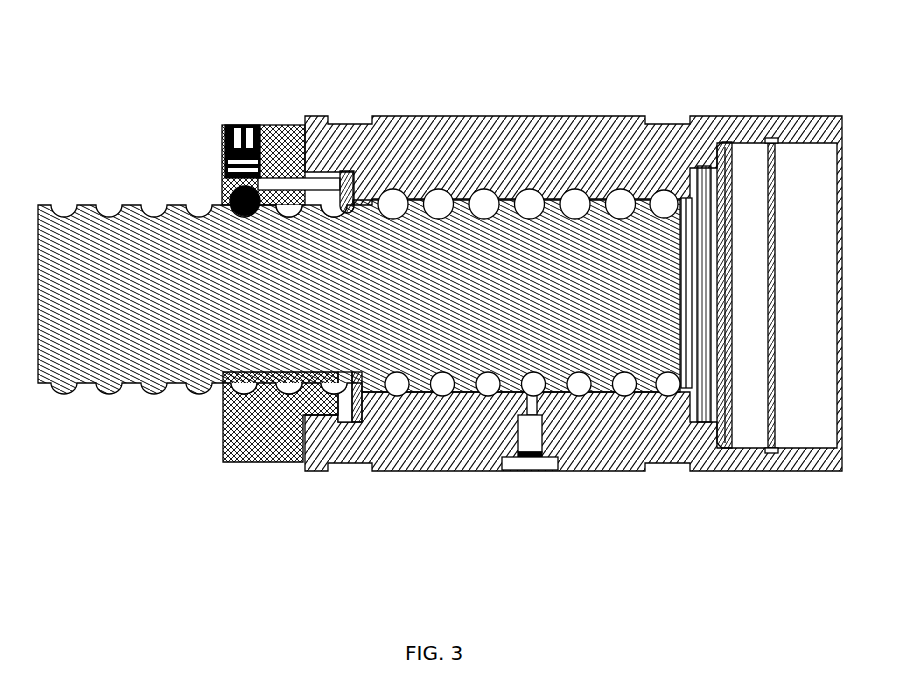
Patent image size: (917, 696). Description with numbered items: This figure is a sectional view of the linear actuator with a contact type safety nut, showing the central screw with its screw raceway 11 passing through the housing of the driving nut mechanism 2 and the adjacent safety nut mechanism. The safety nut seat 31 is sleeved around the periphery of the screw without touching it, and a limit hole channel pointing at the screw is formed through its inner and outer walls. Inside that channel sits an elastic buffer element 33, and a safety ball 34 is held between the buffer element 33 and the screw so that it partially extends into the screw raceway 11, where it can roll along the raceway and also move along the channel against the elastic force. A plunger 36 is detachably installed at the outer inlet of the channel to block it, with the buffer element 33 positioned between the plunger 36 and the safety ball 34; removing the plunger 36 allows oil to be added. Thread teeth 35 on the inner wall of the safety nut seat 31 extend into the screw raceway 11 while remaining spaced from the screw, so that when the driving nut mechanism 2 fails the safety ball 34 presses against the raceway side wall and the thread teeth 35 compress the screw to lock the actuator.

The driving nut mechanism 2 is at (430, 473).
The screw raceway 11 is at (178, 376).
The safety nut seat 31 is at (260, 464).
The elastic buffer element 33 is at (222, 163).
The safety ball 34 is at (228, 199).
The thread teeth 35 is at (297, 124).
The plunger 36 is at (242, 125).